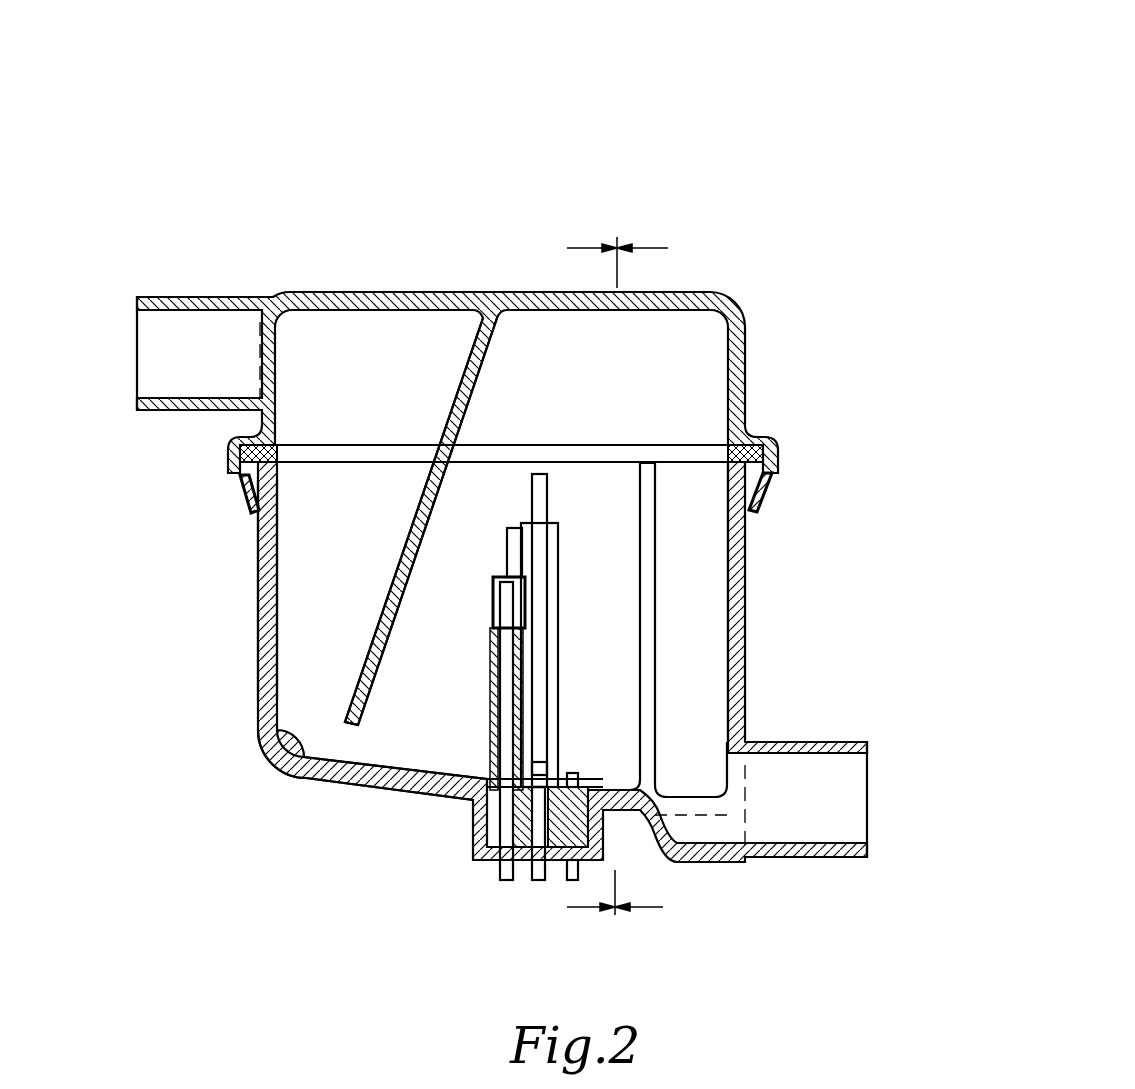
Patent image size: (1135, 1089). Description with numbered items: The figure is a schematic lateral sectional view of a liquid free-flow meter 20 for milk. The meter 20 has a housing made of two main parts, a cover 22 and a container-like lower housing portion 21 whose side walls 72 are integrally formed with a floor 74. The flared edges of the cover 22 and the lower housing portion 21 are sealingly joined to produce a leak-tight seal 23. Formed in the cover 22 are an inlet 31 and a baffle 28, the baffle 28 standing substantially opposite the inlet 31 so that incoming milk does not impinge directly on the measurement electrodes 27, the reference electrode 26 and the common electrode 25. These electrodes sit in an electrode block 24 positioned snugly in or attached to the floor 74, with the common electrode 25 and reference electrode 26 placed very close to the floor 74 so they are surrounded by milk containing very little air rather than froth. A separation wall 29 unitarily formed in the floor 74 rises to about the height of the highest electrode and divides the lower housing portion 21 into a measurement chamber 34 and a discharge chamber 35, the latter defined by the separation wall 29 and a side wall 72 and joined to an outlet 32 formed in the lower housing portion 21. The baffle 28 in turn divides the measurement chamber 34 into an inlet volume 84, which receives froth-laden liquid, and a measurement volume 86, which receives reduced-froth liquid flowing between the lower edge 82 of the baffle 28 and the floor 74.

The meter 20 is at (650, 150).
The lower housing portion 21 is at (267, 630).
The cover 22 is at (357, 294).
The leak-tight seal 23 is at (230, 468).
The electrode block 24 is at (572, 820).
The common electrode 25 is at (547, 773).
The reference electrode 26 is at (572, 780).
The measurement electrodes 27 is at (507, 605).
The baffle 28 is at (386, 606).
The separation wall 29 is at (650, 497).
The inlet 31 is at (224, 297).
The outlet 32 is at (837, 857).
The measurement chamber 34 is at (442, 680).
The discharge chamber 35 is at (693, 738).
The side walls 72 is at (268, 567).
The floor 74 is at (380, 800).
The lower edge 82 is at (272, 764).
The inlet volume 84 is at (338, 568).
The measurement volume 86 is at (445, 570).